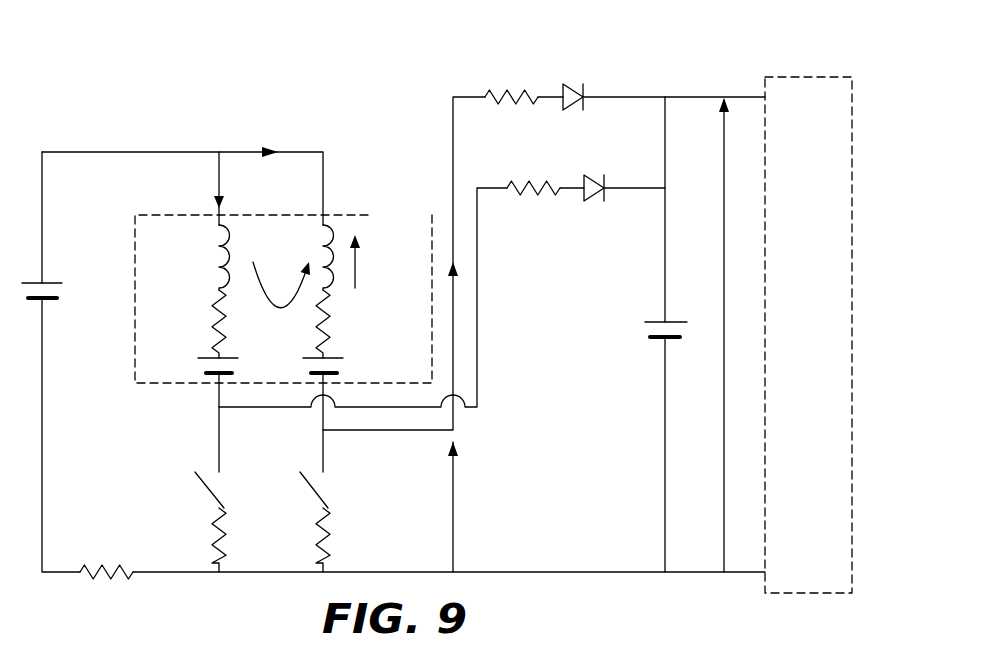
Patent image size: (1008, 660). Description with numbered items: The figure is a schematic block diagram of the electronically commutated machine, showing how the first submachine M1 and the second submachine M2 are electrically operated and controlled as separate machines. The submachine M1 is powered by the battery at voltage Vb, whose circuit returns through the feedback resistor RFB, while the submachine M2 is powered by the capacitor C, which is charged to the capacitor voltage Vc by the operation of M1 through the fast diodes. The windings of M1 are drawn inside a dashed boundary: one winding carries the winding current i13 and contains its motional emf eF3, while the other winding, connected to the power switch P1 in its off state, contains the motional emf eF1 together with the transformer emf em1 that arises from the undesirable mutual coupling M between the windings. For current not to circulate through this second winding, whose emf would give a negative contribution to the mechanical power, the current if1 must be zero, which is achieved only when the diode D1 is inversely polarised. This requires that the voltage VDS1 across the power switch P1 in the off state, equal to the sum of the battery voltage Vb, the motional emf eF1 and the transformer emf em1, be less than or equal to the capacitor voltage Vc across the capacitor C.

The first submachine M1 is at (286, 270).
The second submachine M2 is at (817, 305).
The motional emf of a winding of submachine M1 eF3 is at (255, 350).
The motional emf of the winding connected to switch P1 eF1 is at (342, 343).
The transformer emf em1 is at (381, 263).
The mutual coupling M is at (281, 280).
The winding current i13 is at (195, 188).
The current in the off winding if1 is at (271, 122).
The battery voltage Vb is at (73, 268).
The feedback resistor RFB is at (106, 541).
The power switch P1 is at (353, 522).
The voltage across the power switch VDS1 is at (506, 417).
The fast diode D1 is at (554, 123).
The capacitor C is at (652, 334).
The capacitor voltage Vc is at (741, 335).